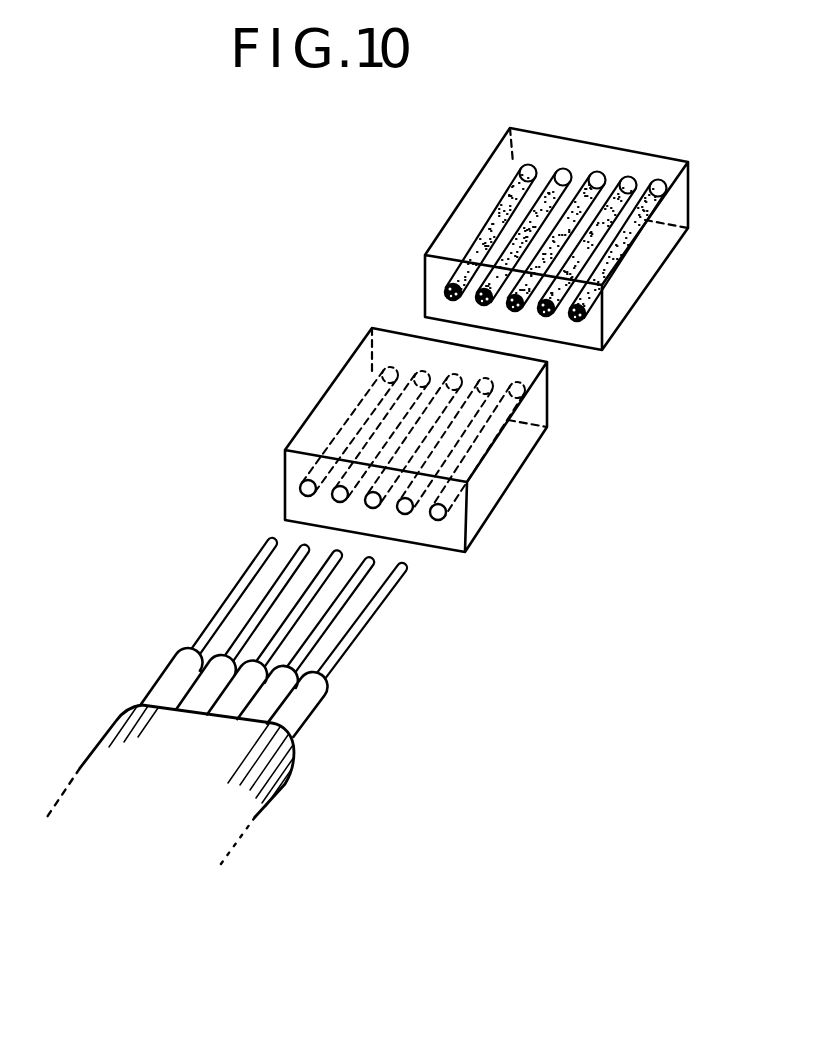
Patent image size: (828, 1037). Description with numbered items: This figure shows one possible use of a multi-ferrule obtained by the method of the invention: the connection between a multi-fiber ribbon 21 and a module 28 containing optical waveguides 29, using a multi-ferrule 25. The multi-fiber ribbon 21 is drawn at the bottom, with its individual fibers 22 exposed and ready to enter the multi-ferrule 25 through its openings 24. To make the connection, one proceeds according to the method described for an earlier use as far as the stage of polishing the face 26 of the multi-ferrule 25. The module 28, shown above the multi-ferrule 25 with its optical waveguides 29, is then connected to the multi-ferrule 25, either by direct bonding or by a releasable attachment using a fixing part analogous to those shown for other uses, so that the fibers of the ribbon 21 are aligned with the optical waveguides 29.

The multi-fiber ribbon 21 is at (248, 780).
The insulated conductors 22 is at (228, 600).
The conductor receiving holes 24 is at (300, 493).
The multi-ferrule 25 is at (513, 482).
The face 26 is at (548, 398).
The module 28 is at (633, 283).
The optical waveguides 29 is at (444, 292).